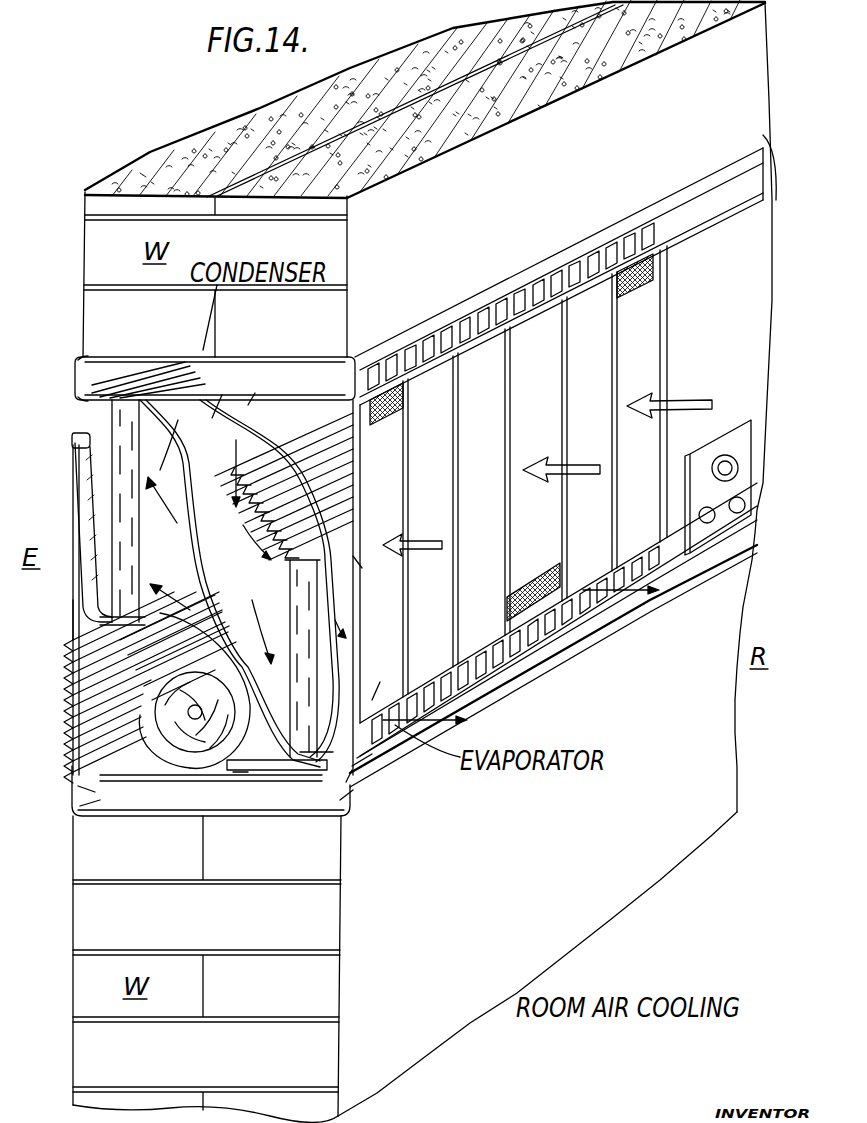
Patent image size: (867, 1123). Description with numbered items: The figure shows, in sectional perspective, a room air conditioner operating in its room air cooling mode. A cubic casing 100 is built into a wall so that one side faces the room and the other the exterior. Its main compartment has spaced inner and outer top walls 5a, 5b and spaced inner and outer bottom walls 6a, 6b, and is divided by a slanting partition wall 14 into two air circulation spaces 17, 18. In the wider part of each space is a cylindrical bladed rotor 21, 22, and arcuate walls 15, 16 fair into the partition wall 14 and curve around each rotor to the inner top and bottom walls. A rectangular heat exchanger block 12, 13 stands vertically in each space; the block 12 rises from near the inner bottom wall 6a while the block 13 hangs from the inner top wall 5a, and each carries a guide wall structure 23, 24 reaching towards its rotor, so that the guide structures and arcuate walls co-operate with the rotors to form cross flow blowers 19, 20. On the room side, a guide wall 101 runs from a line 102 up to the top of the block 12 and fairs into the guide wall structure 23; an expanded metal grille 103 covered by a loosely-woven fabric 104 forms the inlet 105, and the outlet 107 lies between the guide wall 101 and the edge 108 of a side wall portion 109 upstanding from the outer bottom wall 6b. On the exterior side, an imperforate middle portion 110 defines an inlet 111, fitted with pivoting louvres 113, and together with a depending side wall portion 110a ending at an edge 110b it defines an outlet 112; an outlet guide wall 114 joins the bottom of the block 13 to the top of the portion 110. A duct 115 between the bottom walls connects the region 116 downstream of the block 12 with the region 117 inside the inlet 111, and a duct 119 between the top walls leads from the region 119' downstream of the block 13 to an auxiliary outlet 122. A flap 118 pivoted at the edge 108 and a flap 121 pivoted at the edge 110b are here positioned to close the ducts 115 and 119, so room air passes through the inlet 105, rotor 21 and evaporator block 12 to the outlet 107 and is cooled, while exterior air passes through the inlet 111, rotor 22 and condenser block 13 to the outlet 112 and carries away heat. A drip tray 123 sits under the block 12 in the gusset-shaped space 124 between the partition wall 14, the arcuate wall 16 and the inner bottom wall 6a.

The casing 100 is at (772, 140).
The auxiliary outlet 122 is at (555, 280).
The inlet 105 is at (545, 444).
The loosely-woven fabric 104 is at (390, 407).
The outlet 107 is at (605, 636).
The side wall portion 109 is at (540, 672).
The edge 108 is at (352, 766).
The region 116 is at (352, 790).
The flap 118 is at (350, 800).
The duct 119 is at (215, 378).
The flap 121 is at (138, 430).
The depending side wall portion 110a is at (82, 358).
The edge 110b is at (82, 397).
The outlet 112 is at (87, 415).
The region 119' is at (56, 446).
The outlet guide wall 114 is at (87, 492).
The imperforate middle portion 110 is at (74, 587).
The heat exchanger block 13 is at (115, 527).
The air circulation space 18 is at (178, 563).
The partition wall 14 is at (256, 612).
The air circulation space 17 is at (240, 579).
The cylindrical bladed rotor 21 is at (332, 438).
The cross flow blower 19 is at (330, 500).
The guide wall structure 23 is at (300, 540).
The inner top wall 5a is at (222, 395).
The outer top wall 5b is at (178, 420).
The arcuate wall 15 is at (255, 393).
The heat exchanger block 12 is at (330, 650).
The expanded metal grille 103 is at (356, 562).
The guide wall 101 is at (335, 610).
The line 102 is at (380, 682).
The cross flow blower 20 is at (120, 664).
The inlet 111 is at (62, 770).
The guide wall structure 24 is at (137, 640).
The pivoting louvres 113 is at (80, 786).
The region 117 is at (83, 800).
The cylindrical bladed rotor 22 is at (180, 760).
The inner bottom wall 6a is at (153, 780).
The outer bottom wall 6b is at (188, 790).
The arcuate wall 16 is at (240, 775).
The gusset-shaped space 124 is at (252, 762).
The drip tray 123 is at (290, 745).
The duct 115 is at (216, 809).